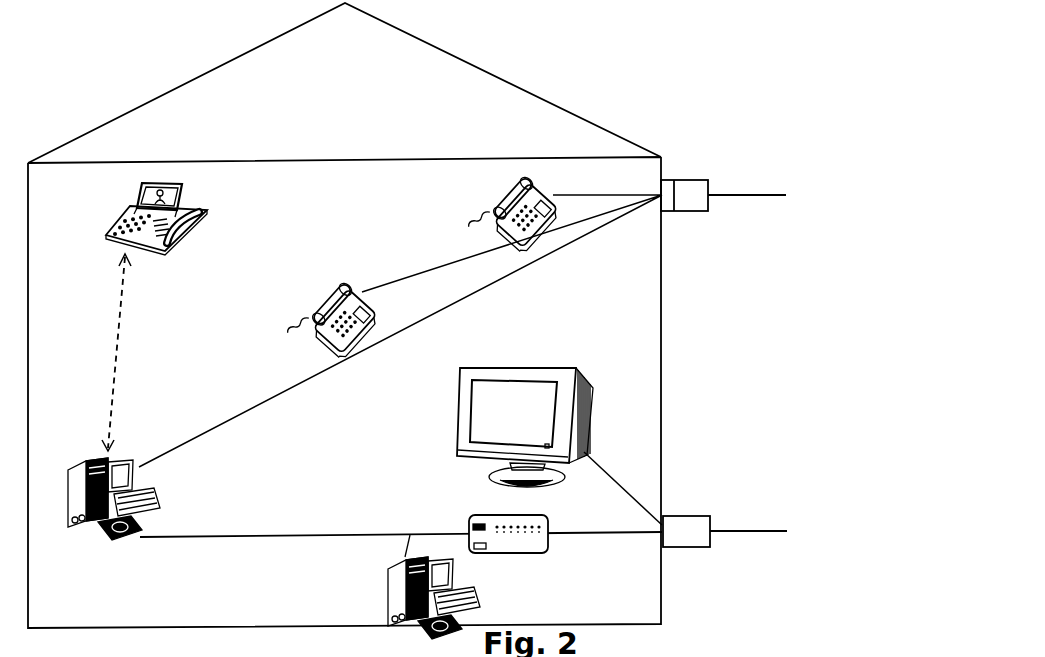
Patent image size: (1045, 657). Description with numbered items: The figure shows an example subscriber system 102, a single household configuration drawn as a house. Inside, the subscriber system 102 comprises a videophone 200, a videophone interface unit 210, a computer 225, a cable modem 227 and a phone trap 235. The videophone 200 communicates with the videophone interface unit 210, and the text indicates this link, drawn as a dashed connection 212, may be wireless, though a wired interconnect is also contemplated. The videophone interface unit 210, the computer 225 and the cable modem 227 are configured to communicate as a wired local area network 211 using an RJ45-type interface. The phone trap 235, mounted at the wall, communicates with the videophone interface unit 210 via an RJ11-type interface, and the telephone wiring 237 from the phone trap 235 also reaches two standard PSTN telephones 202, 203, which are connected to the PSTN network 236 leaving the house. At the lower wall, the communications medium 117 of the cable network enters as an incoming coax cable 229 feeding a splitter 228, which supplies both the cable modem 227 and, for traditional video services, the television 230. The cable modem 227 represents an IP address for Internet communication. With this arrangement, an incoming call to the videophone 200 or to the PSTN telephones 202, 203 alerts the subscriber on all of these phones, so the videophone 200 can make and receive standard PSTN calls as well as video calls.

The subscriber system 102 is at (165, 85).
The communications medium 117 is at (780, 487).
The videophone 200 is at (192, 200).
The PSTN telephone 202 is at (497, 217).
The PSTN telephone 203 is at (325, 292).
The videophone interface unit 210 is at (70, 520).
The local area network 211 is at (308, 530).
The wireless link 212 is at (113, 393).
The computer 225 is at (425, 552).
The cable modem 227 is at (548, 550).
The splitter 228 is at (681, 525).
The incoming coax cable 229 is at (760, 533).
The television 230 is at (568, 370).
The phone trap 235 is at (680, 176).
The PSTN network 236 is at (747, 177).
The telephone wiring 237 is at (578, 200).